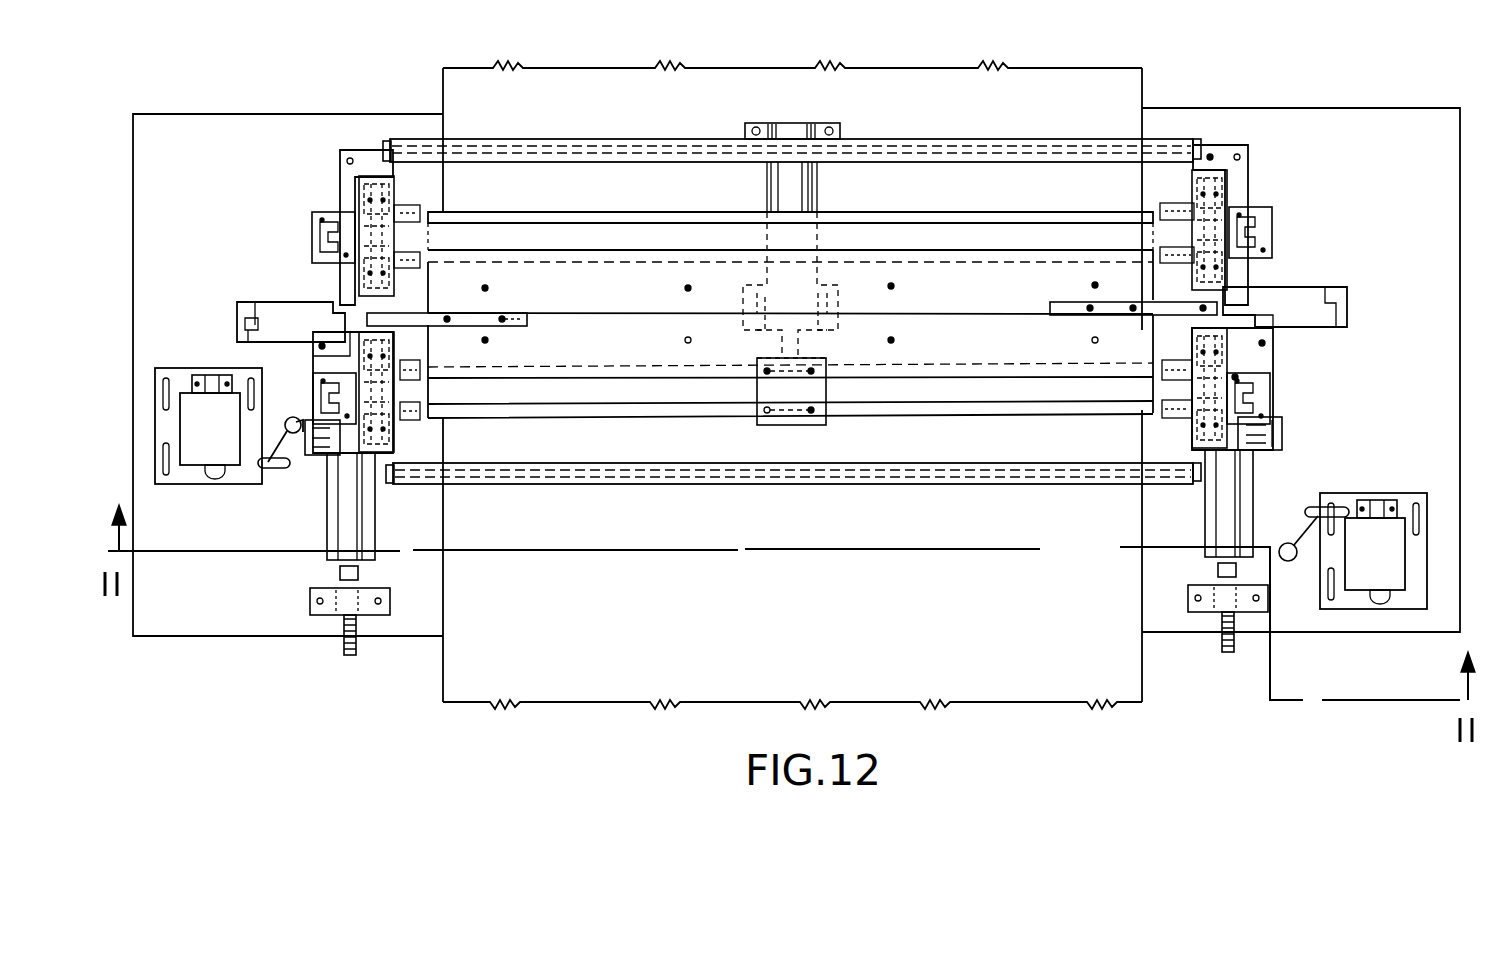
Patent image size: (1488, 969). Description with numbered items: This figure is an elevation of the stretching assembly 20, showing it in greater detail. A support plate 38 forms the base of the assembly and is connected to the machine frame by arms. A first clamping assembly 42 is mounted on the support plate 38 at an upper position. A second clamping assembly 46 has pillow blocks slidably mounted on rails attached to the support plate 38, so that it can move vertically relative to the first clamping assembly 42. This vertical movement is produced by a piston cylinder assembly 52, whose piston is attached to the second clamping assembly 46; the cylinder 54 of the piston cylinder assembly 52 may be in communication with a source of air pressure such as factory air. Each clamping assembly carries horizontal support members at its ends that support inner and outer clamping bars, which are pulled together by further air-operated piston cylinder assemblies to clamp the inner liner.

The support plate 38 is at (202, 140).
The stretching assembly 20 is at (962, 139).
The piston cylinder assembly 52 is at (823, 175).
The cylinder 54 is at (818, 191).
The first clamping assembly 42 is at (1218, 208).
The second clamping assembly 46 is at (1225, 372).